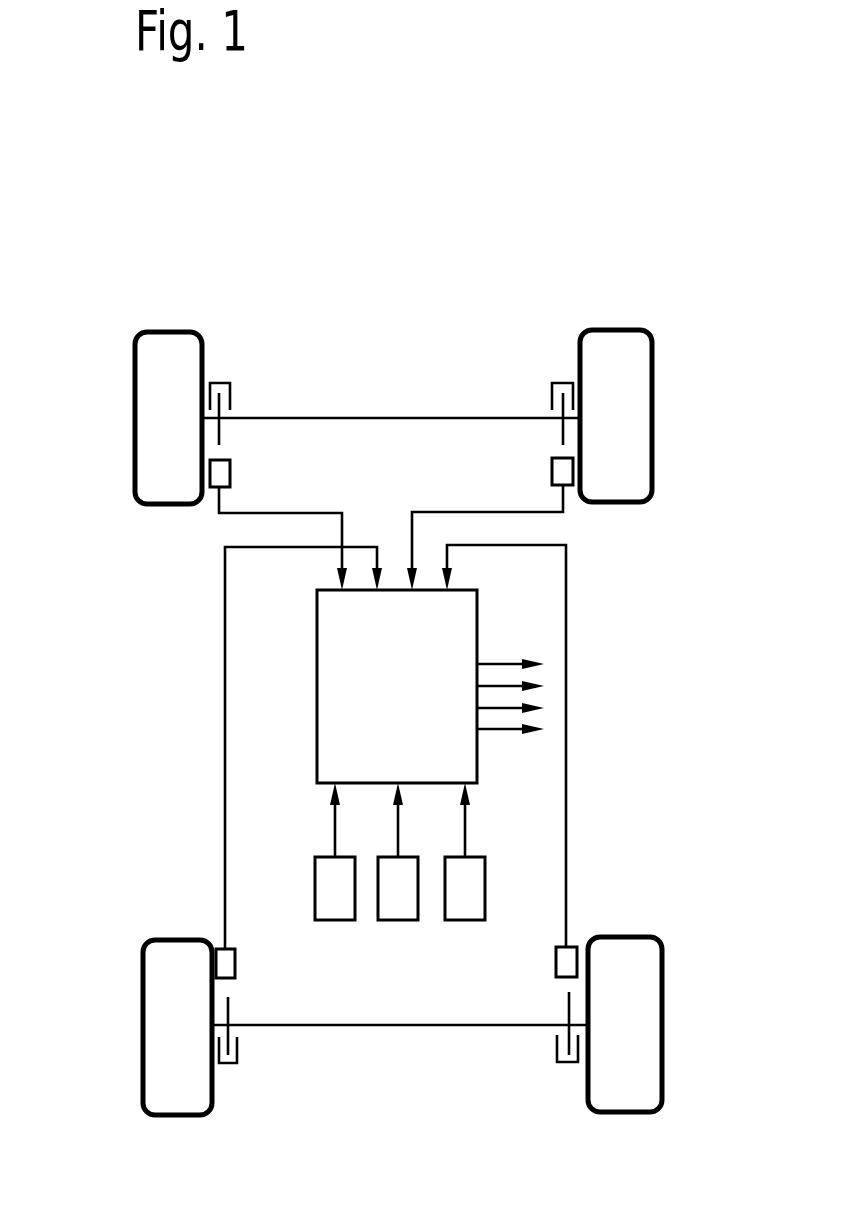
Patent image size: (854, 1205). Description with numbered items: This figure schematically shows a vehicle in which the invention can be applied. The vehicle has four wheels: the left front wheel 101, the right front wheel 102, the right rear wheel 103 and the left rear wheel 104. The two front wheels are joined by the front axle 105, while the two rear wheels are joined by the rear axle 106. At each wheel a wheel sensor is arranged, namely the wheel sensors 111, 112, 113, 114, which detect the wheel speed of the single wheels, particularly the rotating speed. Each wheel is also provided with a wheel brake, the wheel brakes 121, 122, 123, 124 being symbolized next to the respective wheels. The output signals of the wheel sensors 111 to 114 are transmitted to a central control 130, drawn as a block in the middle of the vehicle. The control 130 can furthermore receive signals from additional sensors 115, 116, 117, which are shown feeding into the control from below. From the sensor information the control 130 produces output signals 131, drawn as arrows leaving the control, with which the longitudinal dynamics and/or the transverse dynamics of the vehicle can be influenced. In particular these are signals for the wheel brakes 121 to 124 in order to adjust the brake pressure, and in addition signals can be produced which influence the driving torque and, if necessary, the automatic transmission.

The left front wheel 101 is at (157, 378).
The right front wheel 102 is at (630, 405).
The right rear wheel 103 is at (637, 1041).
The left rear wheel 104 is at (170, 1043).
The front axle 105 is at (372, 418).
The rear axle 106 is at (393, 1025).
The wheel sensor 111 is at (220, 472).
The wheel sensor 112 is at (552, 472).
The wheel sensor 113 is at (558, 960).
The wheel sensor 114 is at (237, 960).
The additional sensor 115 is at (337, 903).
The additional sensor 116 is at (398, 903).
The additional sensor 117 is at (465, 903).
The wheel brake 121 is at (220, 382).
The wheel brake 122 is at (563, 382).
The wheel brake 123 is at (557, 1052).
The wheel brake 124 is at (238, 1053).
The control 130 is at (410, 693).
The output signals 131 is at (515, 644).